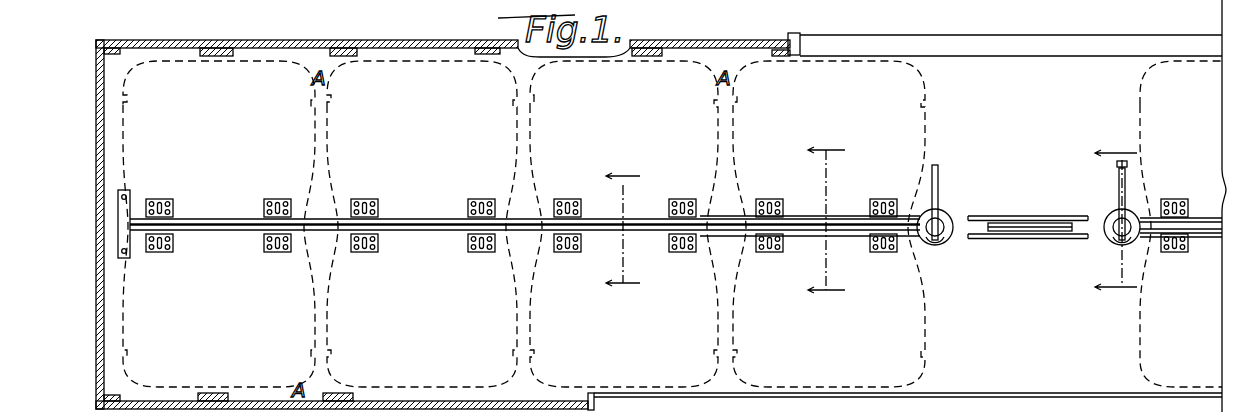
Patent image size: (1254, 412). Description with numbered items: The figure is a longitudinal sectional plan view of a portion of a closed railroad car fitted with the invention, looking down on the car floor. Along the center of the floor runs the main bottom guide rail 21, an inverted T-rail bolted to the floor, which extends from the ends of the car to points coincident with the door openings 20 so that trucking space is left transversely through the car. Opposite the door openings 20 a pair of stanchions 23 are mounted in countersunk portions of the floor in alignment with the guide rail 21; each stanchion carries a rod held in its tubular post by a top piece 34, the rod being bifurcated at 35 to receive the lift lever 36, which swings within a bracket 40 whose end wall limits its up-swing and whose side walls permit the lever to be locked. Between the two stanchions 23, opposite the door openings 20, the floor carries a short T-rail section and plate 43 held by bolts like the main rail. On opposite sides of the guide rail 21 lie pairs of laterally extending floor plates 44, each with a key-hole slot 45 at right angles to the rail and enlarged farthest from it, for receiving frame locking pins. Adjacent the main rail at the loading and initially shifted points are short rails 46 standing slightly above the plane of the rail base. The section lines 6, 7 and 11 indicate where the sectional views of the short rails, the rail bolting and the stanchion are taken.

The door opening 20 is at (813, 46).
The guide rail 21 is at (613, 220).
The stanchion 23 is at (941, 214).
The top piece 34 is at (940, 238).
The bifurcation 35 is at (930, 246).
The lift lever 36 is at (939, 172).
The bracket 40 is at (1128, 192).
The short T-rail section and plate 43 is at (1030, 224).
The floor plate 44 is at (263, 248).
The key-hole slot 45 is at (163, 252).
The short rail 46 is at (828, 218).
The section line 6- 6 is at (826, 219).
The section line 7- 7 is at (623, 230).
The section line 11- 11 is at (1116, 222).